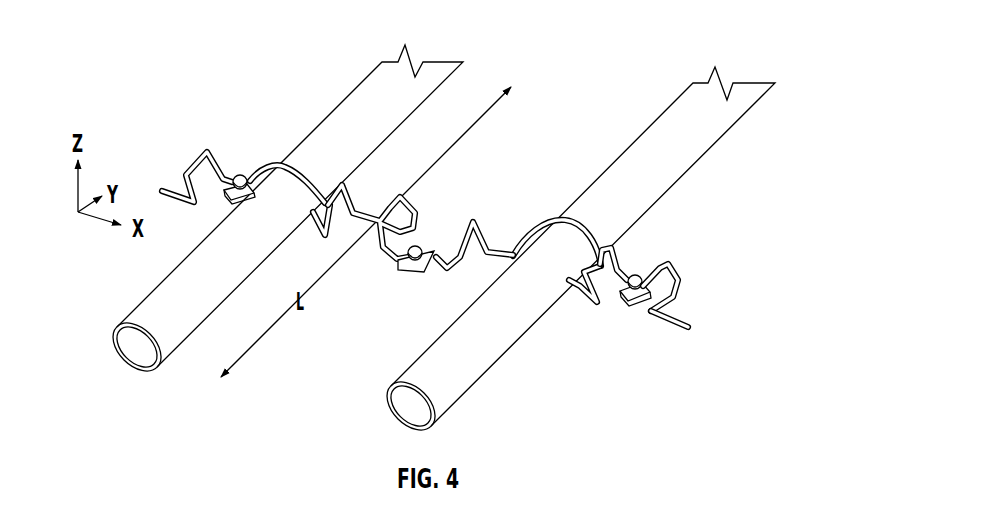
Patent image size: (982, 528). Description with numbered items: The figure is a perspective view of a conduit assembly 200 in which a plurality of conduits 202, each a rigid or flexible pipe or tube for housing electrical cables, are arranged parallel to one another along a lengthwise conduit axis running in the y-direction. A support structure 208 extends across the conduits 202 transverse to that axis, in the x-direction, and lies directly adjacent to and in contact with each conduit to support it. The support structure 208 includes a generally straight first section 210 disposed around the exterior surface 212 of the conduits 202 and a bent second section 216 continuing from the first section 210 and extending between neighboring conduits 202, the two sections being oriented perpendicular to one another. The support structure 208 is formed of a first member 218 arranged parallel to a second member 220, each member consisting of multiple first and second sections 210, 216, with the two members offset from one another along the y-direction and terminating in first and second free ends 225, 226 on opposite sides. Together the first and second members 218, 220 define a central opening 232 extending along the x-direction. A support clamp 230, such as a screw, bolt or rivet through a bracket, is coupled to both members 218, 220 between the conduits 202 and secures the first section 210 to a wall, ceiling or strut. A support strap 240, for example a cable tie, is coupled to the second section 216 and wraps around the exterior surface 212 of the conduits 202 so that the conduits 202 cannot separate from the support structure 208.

The conduit assembly 200 is at (408, 193).
The conduits 202 is at (447, 233).
The exterior surface 212 is at (485, 362).
The support strap 240 is at (423, 184).
The first free end 225 is at (167, 186).
The second section 216 is at (460, 221).
The second member 220 is at (501, 232).
The first section 210 is at (388, 253).
The support clamp 230 is at (399, 283).
The first member 218 is at (434, 280).
The support structure 208 is at (719, 278).
The central opening 232 is at (670, 310).
The second free end 226 is at (690, 327).